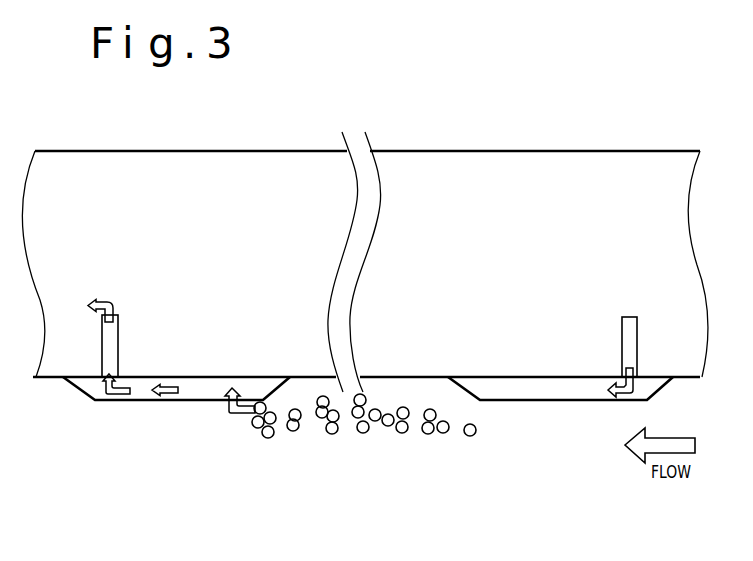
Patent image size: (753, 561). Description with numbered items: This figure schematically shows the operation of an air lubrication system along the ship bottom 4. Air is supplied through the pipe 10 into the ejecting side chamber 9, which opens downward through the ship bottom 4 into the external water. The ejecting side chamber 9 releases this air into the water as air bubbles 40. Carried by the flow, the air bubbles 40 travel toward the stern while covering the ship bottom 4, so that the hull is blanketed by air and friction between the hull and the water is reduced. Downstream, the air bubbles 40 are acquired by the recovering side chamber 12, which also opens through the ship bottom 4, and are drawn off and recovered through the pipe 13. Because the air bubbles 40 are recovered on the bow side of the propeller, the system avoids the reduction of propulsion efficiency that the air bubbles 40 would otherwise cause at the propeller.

The ship bottom 4 is at (50, 378).
The recovering side chamber 12 is at (134, 429).
The ejecting side chamber 9 is at (546, 429).
The pipe 13 is at (119, 347).
The pipe 10 is at (621, 345).
The air bubbles 40 is at (363, 433).